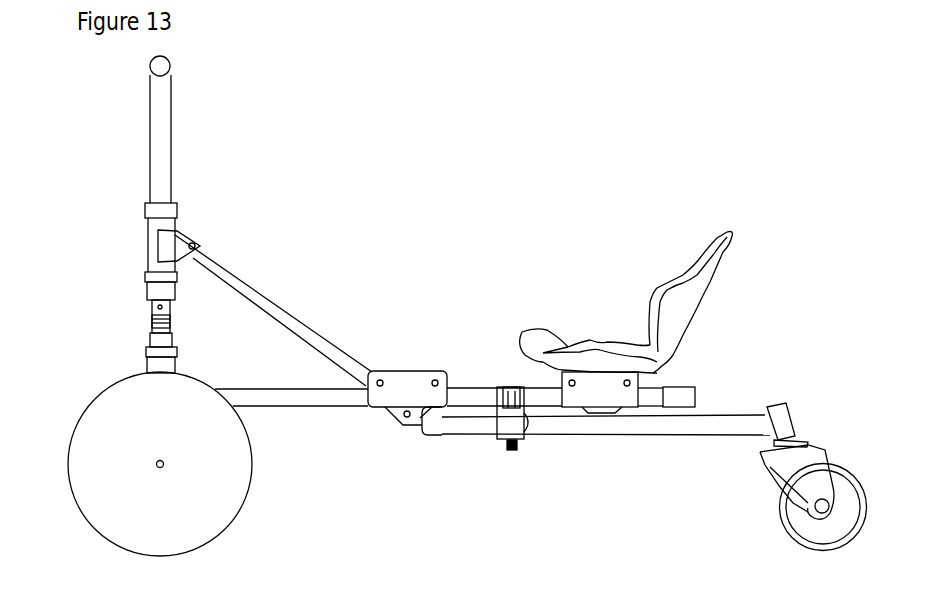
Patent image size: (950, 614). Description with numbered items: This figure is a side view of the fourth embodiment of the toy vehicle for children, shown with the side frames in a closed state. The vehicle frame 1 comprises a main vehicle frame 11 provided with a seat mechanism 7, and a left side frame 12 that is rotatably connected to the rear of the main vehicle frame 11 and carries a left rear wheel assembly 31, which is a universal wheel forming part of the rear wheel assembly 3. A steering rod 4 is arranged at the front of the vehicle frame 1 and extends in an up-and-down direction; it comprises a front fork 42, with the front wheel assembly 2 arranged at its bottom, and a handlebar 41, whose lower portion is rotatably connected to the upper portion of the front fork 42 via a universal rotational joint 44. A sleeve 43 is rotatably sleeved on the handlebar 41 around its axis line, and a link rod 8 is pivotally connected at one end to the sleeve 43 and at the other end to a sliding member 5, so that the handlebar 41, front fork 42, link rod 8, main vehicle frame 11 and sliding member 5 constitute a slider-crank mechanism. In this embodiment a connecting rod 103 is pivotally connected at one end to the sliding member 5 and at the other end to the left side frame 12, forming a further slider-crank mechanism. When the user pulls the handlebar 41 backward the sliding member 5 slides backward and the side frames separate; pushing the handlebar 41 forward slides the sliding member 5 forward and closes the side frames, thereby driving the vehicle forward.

The vehicle frame 1 is at (425, 363).
The front wheel assembly 2 is at (138, 530).
The rear wheel assembly 3 is at (851, 489).
The left rear wheel assembly 31 is at (852, 520).
The steering rod 4 is at (127, 214).
The handlebar 41 is at (160, 180).
The front fork 42 is at (155, 361).
The sleeve 43 is at (152, 243).
The universal rotational joint 44 is at (150, 325).
The sliding member 5 is at (397, 416).
The seat mechanism 7 is at (683, 297).
The link rod 8 is at (258, 283).
The main vehicle frame 11 is at (464, 398).
The left side frame 12 is at (662, 420).
The connecting rod 103 is at (472, 423).